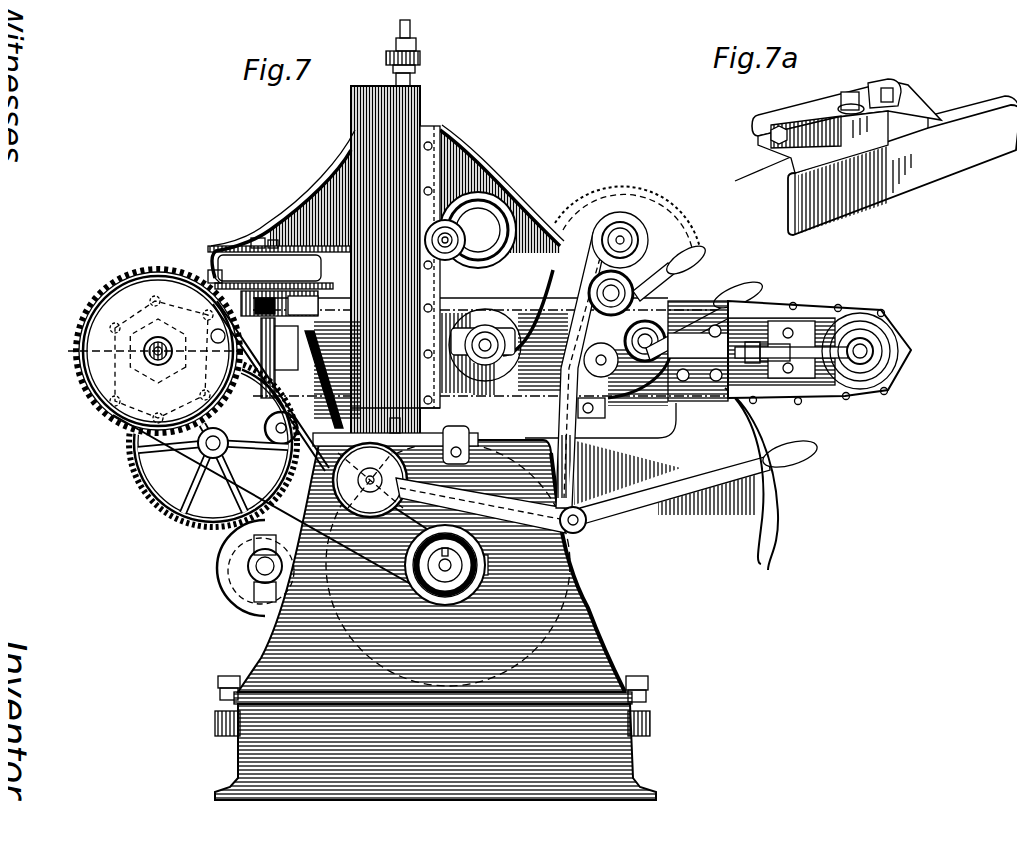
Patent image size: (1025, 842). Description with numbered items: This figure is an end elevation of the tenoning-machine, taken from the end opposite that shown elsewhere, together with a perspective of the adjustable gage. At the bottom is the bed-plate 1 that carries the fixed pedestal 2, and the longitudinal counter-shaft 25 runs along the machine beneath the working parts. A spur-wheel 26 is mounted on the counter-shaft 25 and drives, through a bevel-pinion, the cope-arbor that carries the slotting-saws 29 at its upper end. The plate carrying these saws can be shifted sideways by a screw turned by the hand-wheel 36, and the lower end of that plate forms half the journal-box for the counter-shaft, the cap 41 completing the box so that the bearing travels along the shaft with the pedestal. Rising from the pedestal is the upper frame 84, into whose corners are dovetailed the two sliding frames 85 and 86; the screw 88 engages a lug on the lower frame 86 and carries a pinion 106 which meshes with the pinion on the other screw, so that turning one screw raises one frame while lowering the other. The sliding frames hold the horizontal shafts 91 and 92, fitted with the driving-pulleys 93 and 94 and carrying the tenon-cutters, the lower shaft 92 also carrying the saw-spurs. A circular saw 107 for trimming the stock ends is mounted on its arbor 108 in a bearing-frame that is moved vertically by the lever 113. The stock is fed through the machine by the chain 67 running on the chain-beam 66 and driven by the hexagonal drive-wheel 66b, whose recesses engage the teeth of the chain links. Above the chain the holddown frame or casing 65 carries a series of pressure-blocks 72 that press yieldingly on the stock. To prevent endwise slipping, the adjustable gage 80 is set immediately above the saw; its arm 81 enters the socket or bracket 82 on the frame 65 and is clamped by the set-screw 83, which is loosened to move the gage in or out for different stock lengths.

In FIG. 7, the bed-plate 1 is at (228, 762).
In FIG. 7, the fixed pedestal 2 is at (258, 650).
In FIG. 7, the longitudinal counter-shaft 25 is at (250, 558).
In FIG. 7, the spur-wheel 26 is at (210, 583).
In FIG. 7, the slotting-saws 29 is at (200, 268).
In FIG. 7, the hand-wheel 36 is at (213, 443).
In FIG. 7, the cap of journal-box 41 is at (253, 595).
In FIG. 7, the frame or casing 65 is at (293, 198).
In FIG. 7A, the frame or casing 65 is at (775, 161).
In FIG. 7, the chain-beam 66 is at (813, 373).
In FIG. 7, the hexagonal drive-wheel 66b is at (110, 348).
In FIG. 7, the chain 67 is at (827, 300).
In FIG. 7, the pressure-blocks 72 is at (284, 269).
In FIG. 7, the adjustable gage 80 is at (269, 268).
In FIG. 7A, the adjustable gage 80 is at (902, 165).
In FIG. 7A, the arm 81 is at (893, 110).
In FIG. 7, the socket or bracket 82 is at (232, 232).
In FIG. 7A, the socket or bracket 82 is at (767, 107).
In FIG. 7, the set-screw 83 is at (244, 230).
In FIG. 7A, the set-screw 83 is at (847, 80).
In FIG. 7, the upper frame 84 is at (415, 97).
In FIG. 7, the sliding frame 85 is at (433, 150).
In FIG. 7, the sliding frame 86 is at (407, 377).
In FIG. 7, the screw 88 is at (406, 22).
In FIG. 7, the horizontal shaft 91 is at (457, 230).
In FIG. 7, the horizontal shaft 92 is at (480, 330).
In FIG. 7, the driving-pulley 93 is at (470, 197).
In FIG. 7, the driving-pulley 94 is at (492, 380).
In FIG. 7, the pinion 106 is at (413, 52).
In FIG. 7, the circular saw 107 is at (613, 187).
In FIG. 7, the shaft or arbor 108 is at (622, 232).
In FIG. 7, the lever 113 is at (750, 280).